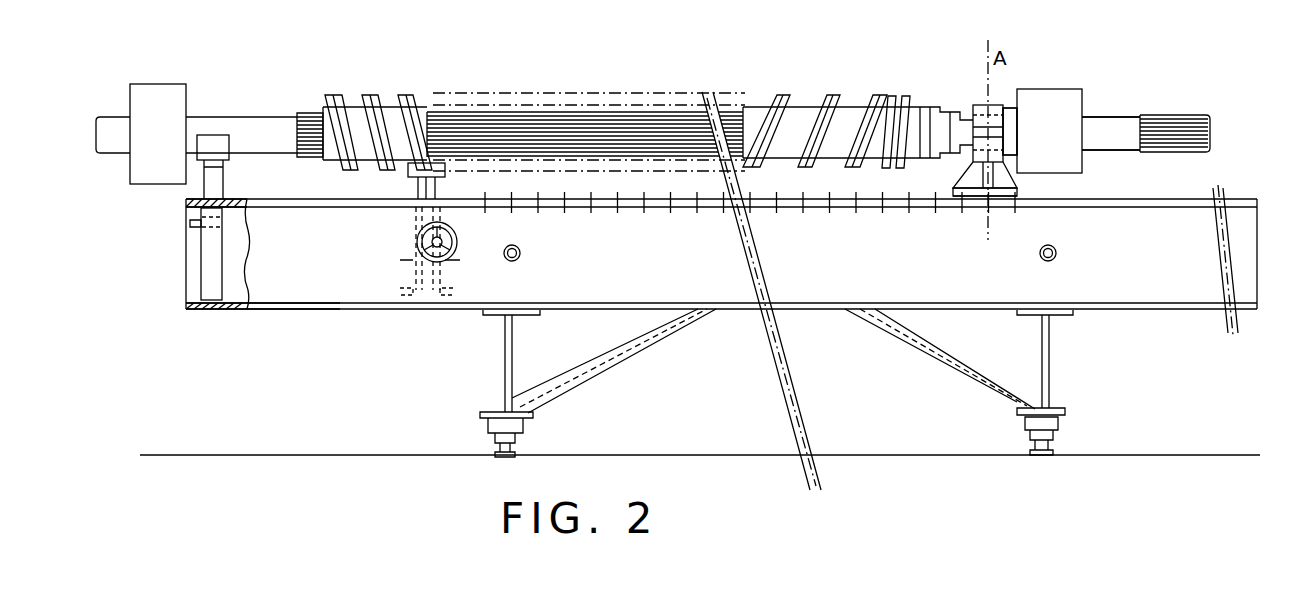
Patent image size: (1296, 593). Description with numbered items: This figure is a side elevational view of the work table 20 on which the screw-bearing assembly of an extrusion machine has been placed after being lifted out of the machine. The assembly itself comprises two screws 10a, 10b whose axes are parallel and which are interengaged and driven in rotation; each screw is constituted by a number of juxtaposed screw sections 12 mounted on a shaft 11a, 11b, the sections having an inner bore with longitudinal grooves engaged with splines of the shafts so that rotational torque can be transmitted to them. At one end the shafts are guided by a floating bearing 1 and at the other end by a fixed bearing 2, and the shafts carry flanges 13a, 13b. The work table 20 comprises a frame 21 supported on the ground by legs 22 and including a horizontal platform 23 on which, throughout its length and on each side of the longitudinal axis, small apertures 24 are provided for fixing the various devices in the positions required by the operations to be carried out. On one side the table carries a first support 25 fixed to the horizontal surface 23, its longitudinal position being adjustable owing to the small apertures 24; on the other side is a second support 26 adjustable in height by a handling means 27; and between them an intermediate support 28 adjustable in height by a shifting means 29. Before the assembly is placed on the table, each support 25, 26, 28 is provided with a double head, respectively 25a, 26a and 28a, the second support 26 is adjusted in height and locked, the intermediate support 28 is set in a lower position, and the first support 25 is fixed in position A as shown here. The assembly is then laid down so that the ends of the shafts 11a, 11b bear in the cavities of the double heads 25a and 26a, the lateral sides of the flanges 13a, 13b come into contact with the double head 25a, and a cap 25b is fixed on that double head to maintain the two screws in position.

The floating bearing 1 is at (172, 94).
The fixed bearing 2 is at (1062, 120).
The screw 10a is at (598, 100).
The screw 10b is at (589, 132).
The shaft 11a is at (1117, 133).
The shaft 11b is at (1111, 133).
The screw section 12 is at (784, 100).
The flange 13a is at (1011, 117).
The flange 13b is at (1010, 131).
The work table 20 is at (487, 326).
The frame 21 is at (327, 292).
The legs 22 is at (506, 388).
The horizontal platform 23 is at (658, 201).
The small apertures 24 is at (957, 205).
The first support 25 is at (1008, 175).
The double head 25a is at (973, 155).
The cap 25b is at (977, 118).
The second support 26 is at (208, 173).
The double head 26a is at (207, 154).
The handling means 27 is at (200, 243).
The intermediate support 28 is at (436, 194).
The double head 28a is at (417, 178).
The shifting means 29 is at (457, 233).